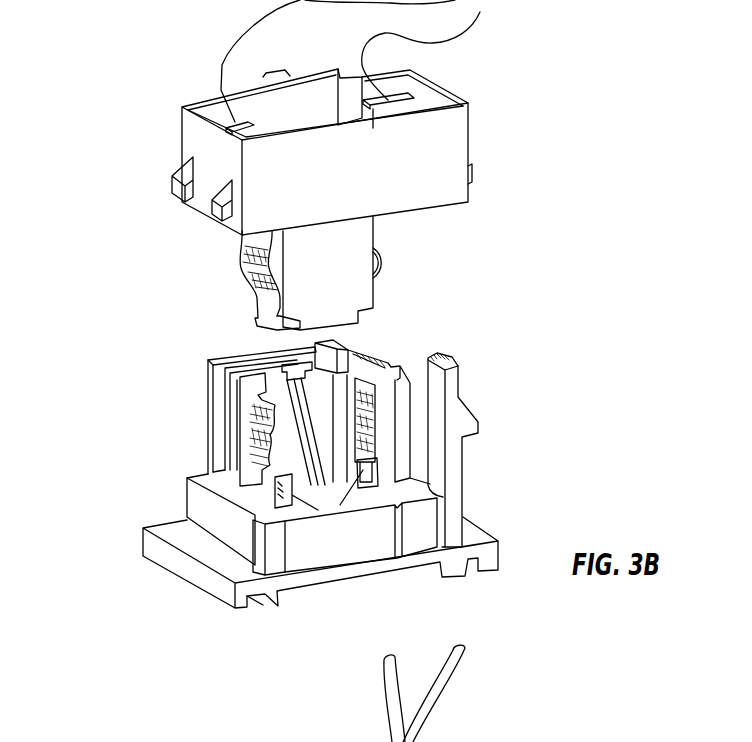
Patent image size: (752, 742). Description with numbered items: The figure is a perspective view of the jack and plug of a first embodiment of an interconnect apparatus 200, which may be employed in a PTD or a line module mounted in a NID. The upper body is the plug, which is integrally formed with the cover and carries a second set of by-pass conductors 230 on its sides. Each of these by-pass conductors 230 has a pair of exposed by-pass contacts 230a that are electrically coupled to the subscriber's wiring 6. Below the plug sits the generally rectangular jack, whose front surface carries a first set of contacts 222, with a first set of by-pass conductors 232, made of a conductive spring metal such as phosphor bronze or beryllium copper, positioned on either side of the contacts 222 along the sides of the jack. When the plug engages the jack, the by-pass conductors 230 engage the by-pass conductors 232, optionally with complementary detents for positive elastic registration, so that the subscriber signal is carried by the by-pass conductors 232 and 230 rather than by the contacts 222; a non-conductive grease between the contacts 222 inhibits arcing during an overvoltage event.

The interconnect apparatus 200 is at (112, 43).
The subscriber's wiring 6 is at (453, 40).
The exposed by-pass contacts 230a is at (250, 118).
The second set of by-pass conductors 230 is at (250, 288).
The first set of contacts 222 is at (288, 402).
The first set of by-pass conductors 232 is at (355, 412).